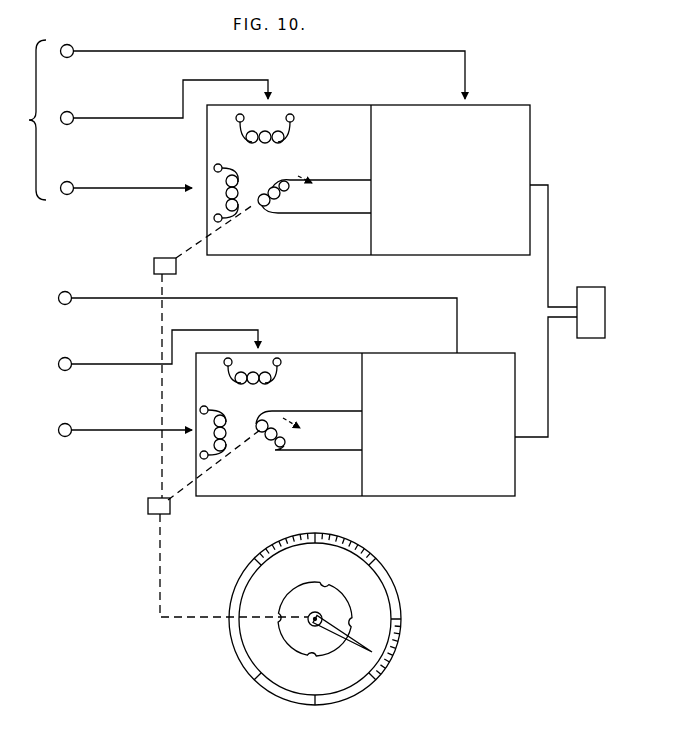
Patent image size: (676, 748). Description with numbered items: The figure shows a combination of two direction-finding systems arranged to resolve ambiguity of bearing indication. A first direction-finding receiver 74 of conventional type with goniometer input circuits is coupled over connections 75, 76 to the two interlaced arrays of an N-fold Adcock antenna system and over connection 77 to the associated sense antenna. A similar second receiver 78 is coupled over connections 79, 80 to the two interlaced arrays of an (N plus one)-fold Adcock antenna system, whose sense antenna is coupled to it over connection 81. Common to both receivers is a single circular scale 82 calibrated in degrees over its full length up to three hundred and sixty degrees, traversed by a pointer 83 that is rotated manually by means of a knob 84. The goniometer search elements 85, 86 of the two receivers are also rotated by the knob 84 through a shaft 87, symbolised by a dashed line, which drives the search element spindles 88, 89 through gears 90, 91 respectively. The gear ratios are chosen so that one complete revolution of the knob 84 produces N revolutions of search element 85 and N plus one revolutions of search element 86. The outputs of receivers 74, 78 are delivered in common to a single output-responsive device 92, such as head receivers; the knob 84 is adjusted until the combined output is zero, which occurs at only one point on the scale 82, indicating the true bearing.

The first direction-finding receiver 74 is at (368, 168).
The connection 75 is at (116, 188).
The connection 76 is at (130, 119).
The connection 77 is at (122, 53).
The second direction-finding receiver 78 is at (355, 414).
The connection 79 is at (93, 430).
The connection 80 is at (113, 364).
The connection 81 is at (113, 298).
The circular scale 82 is at (330, 619).
The pointer 83 is at (358, 645).
The knob 84 is at (290, 592).
The goniometer search element 85 is at (275, 208).
The goniometer search element 86 is at (277, 450).
The shaft 87 is at (158, 478).
The search element spindle 88 is at (226, 228).
The search element spindle 89 is at (223, 470).
The gear 90 is at (176, 268).
The gear 91 is at (170, 510).
The output-responsive device 92 is at (586, 288).